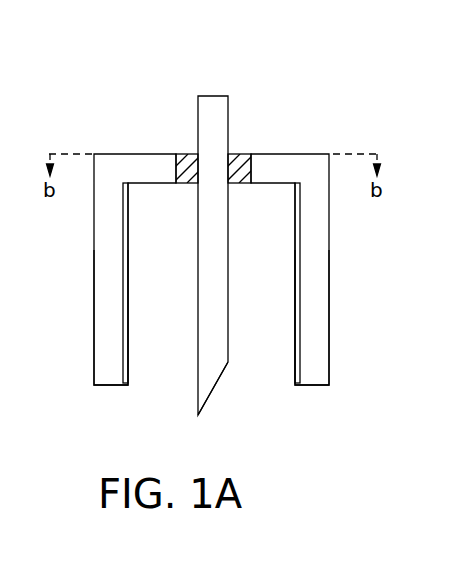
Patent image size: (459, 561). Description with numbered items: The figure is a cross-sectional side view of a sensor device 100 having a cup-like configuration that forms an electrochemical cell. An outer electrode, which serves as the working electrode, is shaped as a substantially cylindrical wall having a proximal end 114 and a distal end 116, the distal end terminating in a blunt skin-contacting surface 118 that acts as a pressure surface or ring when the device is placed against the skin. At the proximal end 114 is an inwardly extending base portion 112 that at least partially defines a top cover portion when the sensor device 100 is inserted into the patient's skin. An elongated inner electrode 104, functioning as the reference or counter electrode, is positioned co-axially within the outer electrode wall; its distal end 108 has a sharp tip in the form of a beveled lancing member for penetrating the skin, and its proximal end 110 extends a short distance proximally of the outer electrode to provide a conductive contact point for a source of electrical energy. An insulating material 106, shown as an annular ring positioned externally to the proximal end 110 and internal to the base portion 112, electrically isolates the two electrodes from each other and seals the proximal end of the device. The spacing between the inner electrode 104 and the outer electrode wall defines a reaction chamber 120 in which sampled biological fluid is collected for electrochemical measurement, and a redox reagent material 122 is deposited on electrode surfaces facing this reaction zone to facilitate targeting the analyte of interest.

The sensor device 100 is at (366, 240).
The inner electrode 104 is at (210, 260).
The insulating material 106 is at (245, 153).
The distal end of inner electrode 108 is at (213, 373).
The proximal end of inner electrode 110 is at (213, 108).
The base portion 112 is at (310, 153).
The proximal end of outer electrode 114 is at (118, 153).
The distal end of outer electrode 116 is at (102, 363).
The skin-contacting surface 118 is at (312, 387).
The reaction chamber 120 is at (143, 213).
The redox reagent material 122 is at (125, 322).